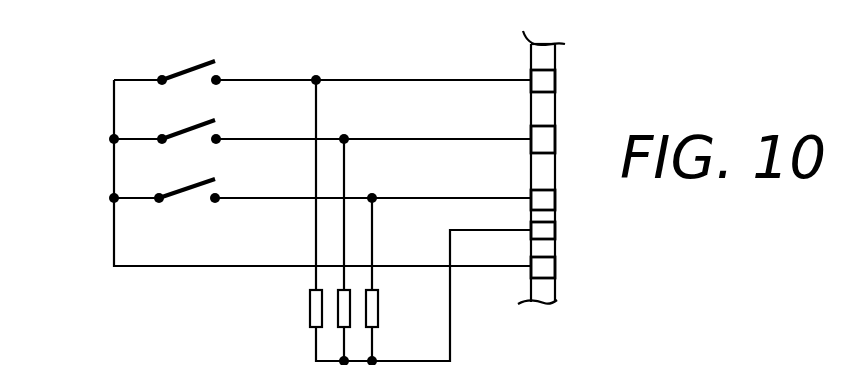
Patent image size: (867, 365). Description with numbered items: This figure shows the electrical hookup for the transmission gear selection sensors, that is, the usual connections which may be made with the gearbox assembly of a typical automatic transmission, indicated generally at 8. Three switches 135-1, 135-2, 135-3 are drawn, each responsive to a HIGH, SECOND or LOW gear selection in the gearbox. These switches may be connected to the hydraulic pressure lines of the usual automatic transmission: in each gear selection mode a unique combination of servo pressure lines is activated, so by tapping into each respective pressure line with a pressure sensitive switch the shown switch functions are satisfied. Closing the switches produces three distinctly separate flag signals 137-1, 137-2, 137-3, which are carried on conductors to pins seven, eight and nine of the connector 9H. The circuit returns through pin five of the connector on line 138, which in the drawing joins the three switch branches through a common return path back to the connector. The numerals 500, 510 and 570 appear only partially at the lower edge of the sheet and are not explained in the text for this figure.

The gearbox assembly connections 8 is at (79, 80).
The switch 135-1 is at (222, 66).
The switch 135-2 is at (222, 128).
The switch 135-3 is at (222, 185).
The flag signal 137-1 is at (432, 78).
The flag signal 137-2 is at (432, 138).
The flag signal 137-3 is at (445, 186).
The return line 138 is at (409, 265).
The connector 9H is at (557, 95).
The component (cut off) 500 is at (620, 354).
The component (cut off) 510 is at (696, 362).
The component (cut off) 570 is at (830, 354).